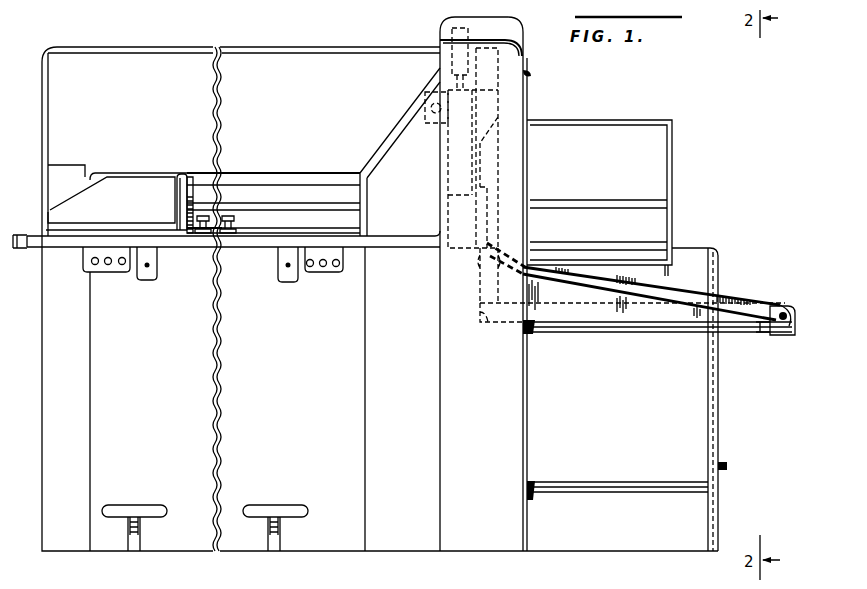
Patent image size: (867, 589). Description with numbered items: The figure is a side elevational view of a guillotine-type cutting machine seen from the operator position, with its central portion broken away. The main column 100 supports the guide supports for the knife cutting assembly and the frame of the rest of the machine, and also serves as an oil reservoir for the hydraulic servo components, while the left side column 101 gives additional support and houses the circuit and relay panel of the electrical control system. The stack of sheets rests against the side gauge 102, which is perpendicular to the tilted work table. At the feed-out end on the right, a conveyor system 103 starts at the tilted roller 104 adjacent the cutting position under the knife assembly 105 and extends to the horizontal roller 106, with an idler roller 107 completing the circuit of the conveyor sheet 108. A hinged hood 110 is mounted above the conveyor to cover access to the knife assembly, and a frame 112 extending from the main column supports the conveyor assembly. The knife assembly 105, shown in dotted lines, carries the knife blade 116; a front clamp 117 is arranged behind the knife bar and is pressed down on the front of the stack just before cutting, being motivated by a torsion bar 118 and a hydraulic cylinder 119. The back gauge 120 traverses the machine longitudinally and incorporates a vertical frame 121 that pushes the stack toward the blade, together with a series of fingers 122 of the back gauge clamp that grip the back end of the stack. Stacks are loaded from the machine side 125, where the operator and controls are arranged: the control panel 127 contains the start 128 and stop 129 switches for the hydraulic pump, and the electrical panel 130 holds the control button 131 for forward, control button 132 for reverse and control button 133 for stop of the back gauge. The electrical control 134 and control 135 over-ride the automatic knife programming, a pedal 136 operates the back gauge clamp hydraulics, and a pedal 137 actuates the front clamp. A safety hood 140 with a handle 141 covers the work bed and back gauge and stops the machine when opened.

The main column 100 is at (447, 478).
The left side column 101 is at (78, 460).
The side gauge 102 is at (297, 217).
The conveyor system 103 is at (634, 337).
The tilted roller 104 is at (492, 245).
The knife assembly 105 is at (486, 88).
The horizontal roller 106 is at (790, 327).
The idler roller 107 is at (489, 319).
The conveyor sheet 108 is at (603, 277).
The hood 110 is at (672, 162).
The frame 112 is at (604, 493).
The knife blade 116 is at (489, 199).
The front clamp 117 is at (461, 253).
The torsion bar 118 is at (428, 112).
The hydraulic cylinder 119 is at (452, 32).
The back gauge 120 is at (120, 192).
The vertical frame 121 is at (177, 178).
The fingers of the back gauge clamp 122 is at (200, 186).
The machine side 125 is at (194, 394).
The control panel 127 is at (83, 257).
The start control switch 128 is at (95, 264).
The stop control switch 129 is at (108, 264).
The electrical panel 130 is at (348, 264).
The control button 131 is at (310, 274).
The control button 132 is at (323, 274).
The control button 133 is at (336, 274).
The electrical control 134 is at (147, 275).
The control 135 is at (280, 275).
The pedal 136 is at (150, 508).
The pedal 137 is at (264, 508).
The safety hood 140 is at (58, 47).
The handle 141 is at (230, 218).